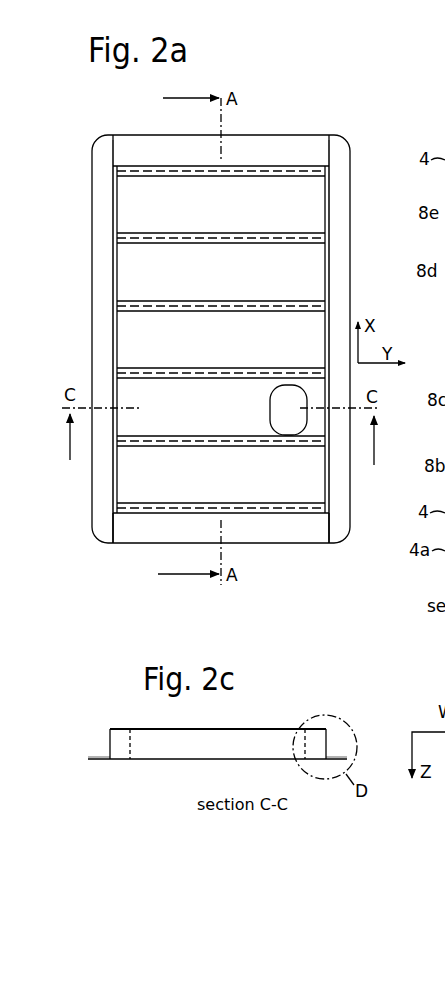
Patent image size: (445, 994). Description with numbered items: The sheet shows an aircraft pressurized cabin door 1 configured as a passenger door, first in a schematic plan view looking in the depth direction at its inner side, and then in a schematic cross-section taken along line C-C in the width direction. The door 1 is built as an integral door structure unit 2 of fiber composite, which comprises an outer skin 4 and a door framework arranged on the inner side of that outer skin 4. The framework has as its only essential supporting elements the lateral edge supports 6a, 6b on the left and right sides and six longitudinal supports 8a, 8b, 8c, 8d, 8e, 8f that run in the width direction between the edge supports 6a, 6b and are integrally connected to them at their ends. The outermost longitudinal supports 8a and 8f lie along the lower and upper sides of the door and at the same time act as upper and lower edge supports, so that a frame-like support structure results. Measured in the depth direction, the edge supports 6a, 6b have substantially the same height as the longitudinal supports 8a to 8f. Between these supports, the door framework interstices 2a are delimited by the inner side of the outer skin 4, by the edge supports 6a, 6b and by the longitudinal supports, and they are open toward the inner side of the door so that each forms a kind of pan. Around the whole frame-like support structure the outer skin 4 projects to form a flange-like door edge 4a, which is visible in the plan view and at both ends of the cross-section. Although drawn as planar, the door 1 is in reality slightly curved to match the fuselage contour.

In FIG. 2A, the aircraft pressurized cabin door 1 is at (354, 131).
In FIG. 2A, the door structure unit 2 is at (299, 551).
In FIG. 2A, the door framework interstices 2a is at (242, 340).
In FIG. 2A, the outer skin 4 is at (129, 212).
In FIG. 2C, the outer skin 4 is at (188, 762).
In FIG. 2A, the door edge 4a is at (134, 544).
In FIG. 2C, the door edge 4a is at (96, 758).
In FIG. 2A, the lateral edge support 6a is at (113, 284).
In FIG. 2C, the lateral edge support 6a is at (110, 740).
In FIG. 2A, the lateral edge support 6b is at (329, 273).
In FIG. 2C, the lateral edge support 6b is at (328, 745).
In FIG. 2A, the longitudinal support 8a is at (188, 503).
In FIG. 2A, the longitudinal support 8b is at (196, 436).
In FIG. 2A, the longitudinal support 8c is at (188, 368).
In FIG. 2A, the longitudinal support 8d is at (188, 301).
In FIG. 2A, the longitudinal support 8e is at (188, 233).
In FIG. 2A, the longitudinal support 8f is at (180, 166).